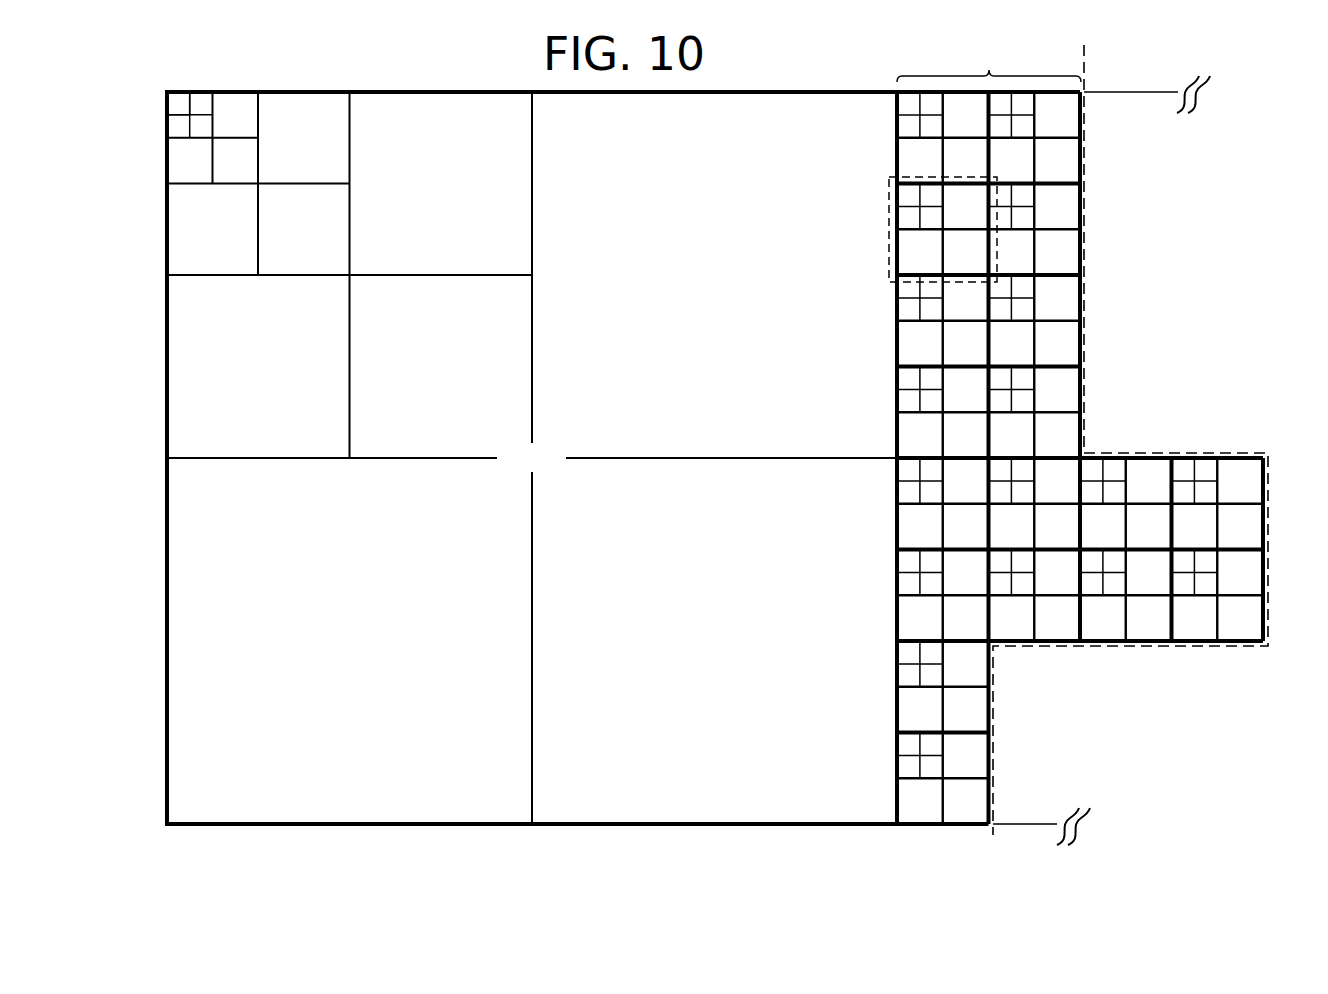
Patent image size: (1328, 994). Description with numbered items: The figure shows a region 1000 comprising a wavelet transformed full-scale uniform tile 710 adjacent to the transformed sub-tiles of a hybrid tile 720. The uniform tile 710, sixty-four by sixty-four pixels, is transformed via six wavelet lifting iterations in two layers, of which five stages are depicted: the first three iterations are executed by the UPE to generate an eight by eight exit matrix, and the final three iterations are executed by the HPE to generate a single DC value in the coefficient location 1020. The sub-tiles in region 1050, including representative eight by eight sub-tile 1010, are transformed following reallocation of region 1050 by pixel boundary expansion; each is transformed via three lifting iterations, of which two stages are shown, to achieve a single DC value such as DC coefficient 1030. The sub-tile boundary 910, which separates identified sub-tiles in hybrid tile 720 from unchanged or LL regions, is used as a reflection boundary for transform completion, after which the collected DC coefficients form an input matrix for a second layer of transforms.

The region 1000 is at (1193, 811).
The full-scale uniform tile 710 is at (518, 468).
The hybrid tile 720 is at (1178, 375).
The sub-tile boundary 910 is at (1086, 70).
The sub-tile 1010 is at (889, 266).
The coefficient location 1020 is at (176, 106).
The DC coefficient 1030 is at (910, 196).
The region of sub-tiles 1050 is at (989, 64).